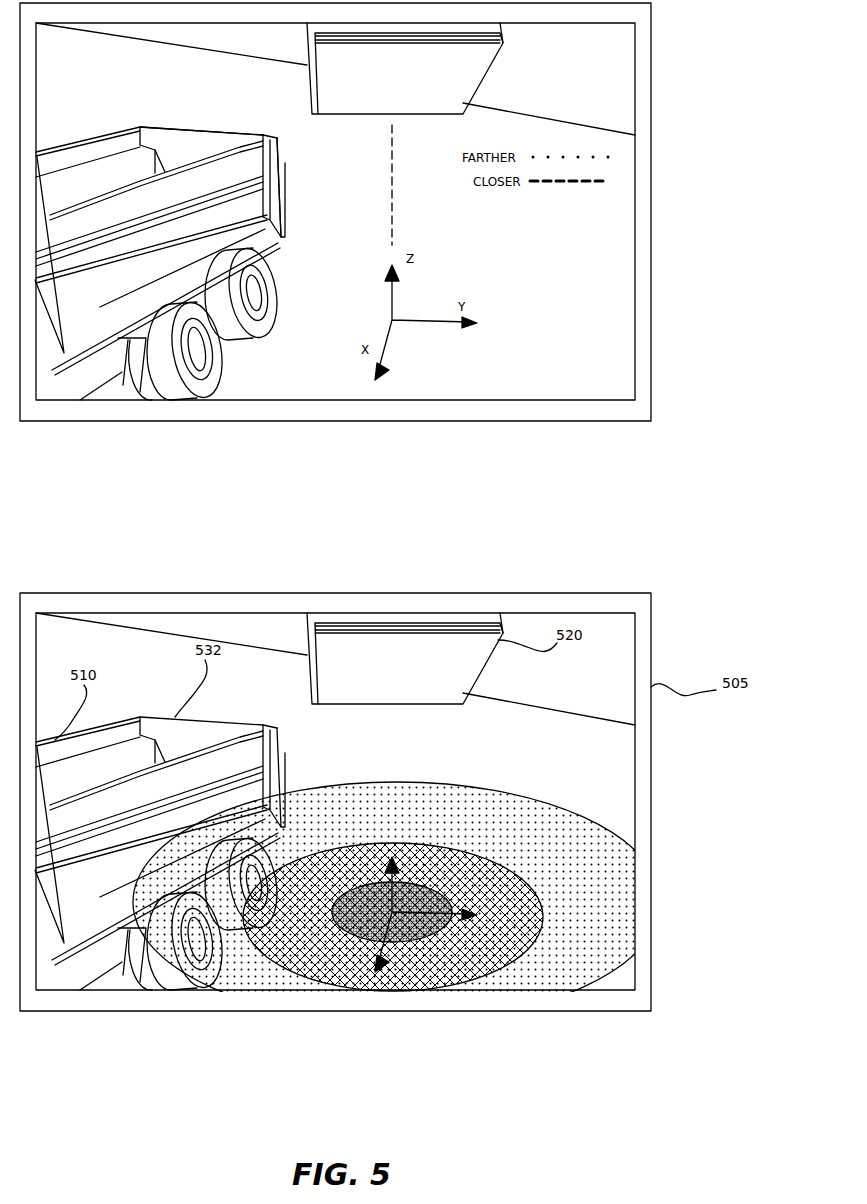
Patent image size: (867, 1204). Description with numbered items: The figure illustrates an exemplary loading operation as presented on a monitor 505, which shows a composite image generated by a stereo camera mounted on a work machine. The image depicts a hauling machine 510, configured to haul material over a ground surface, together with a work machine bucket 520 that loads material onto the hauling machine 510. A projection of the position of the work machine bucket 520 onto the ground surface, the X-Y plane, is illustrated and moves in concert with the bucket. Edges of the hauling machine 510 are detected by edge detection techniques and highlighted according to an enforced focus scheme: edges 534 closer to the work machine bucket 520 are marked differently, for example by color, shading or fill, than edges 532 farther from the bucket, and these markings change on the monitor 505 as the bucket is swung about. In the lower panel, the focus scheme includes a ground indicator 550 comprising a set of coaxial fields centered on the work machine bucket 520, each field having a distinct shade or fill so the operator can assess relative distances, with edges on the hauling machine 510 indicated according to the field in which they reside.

The monitor 505 is at (384, 212).
The hauling machine 510 is at (160, 239).
The work machine bucket 520 is at (445, 68).
The edges farther from work machine bucket 532 is at (201, 93).
The edges closer to work machine bucket 534 is at (287, 163).
The ground indicator 550 is at (397, 868).